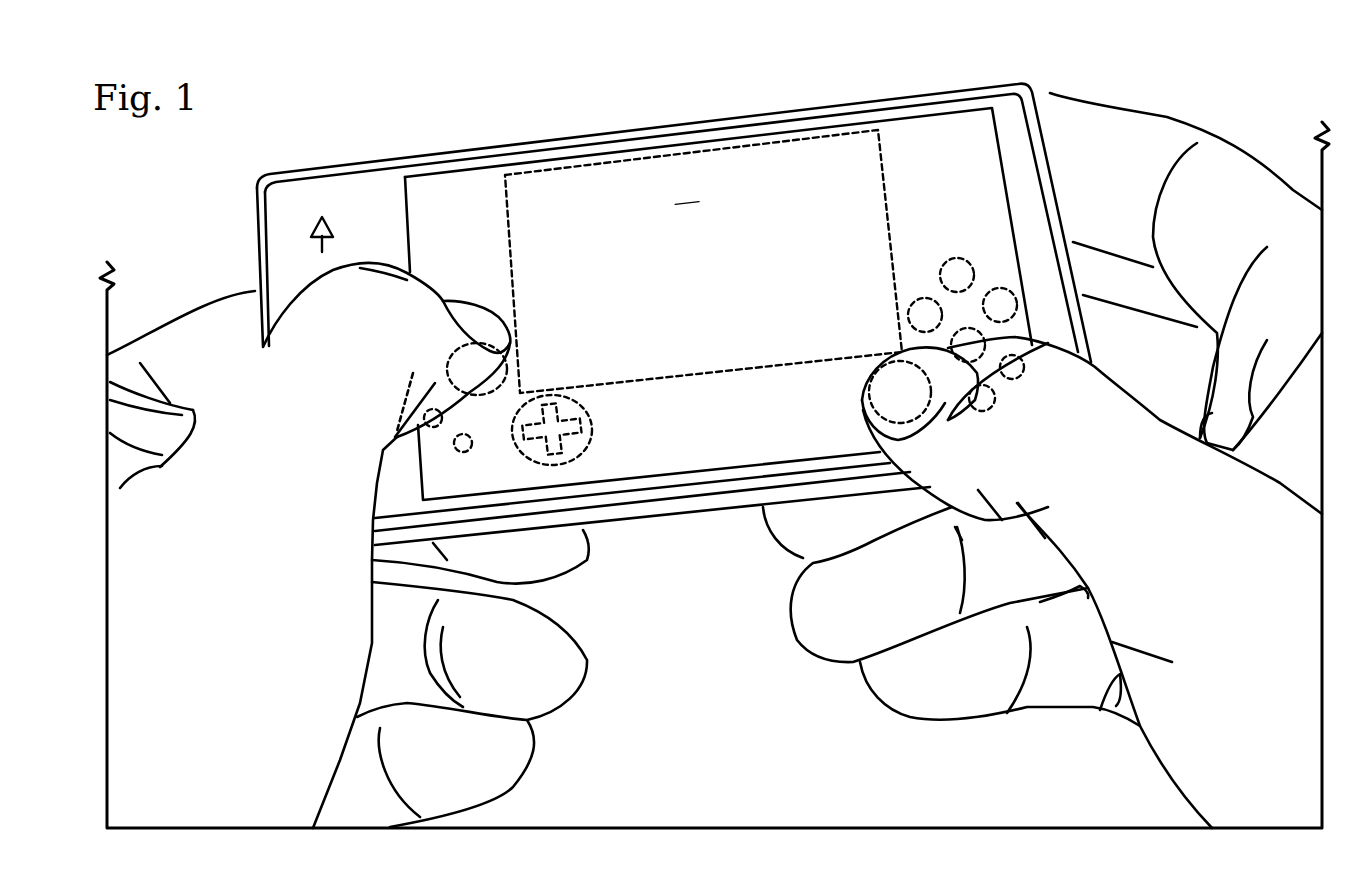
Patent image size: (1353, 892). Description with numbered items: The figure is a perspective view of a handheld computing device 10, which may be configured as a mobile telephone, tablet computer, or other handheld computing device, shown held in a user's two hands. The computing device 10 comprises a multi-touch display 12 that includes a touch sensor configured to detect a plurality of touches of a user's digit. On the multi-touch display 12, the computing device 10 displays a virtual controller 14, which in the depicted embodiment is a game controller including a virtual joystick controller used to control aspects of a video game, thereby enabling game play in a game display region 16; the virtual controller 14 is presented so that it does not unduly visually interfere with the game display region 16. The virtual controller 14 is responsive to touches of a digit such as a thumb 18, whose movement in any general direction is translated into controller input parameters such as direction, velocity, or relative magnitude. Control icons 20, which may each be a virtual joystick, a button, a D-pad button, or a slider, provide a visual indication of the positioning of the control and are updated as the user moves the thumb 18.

The computing device 10 is at (371, 128).
The multi-touch display 12 is at (930, 140).
The virtual controller 14 is at (473, 350).
The game display region 16 is at (703, 261).
The thumb 18 is at (343, 371).
The control icons 20 is at (470, 398).